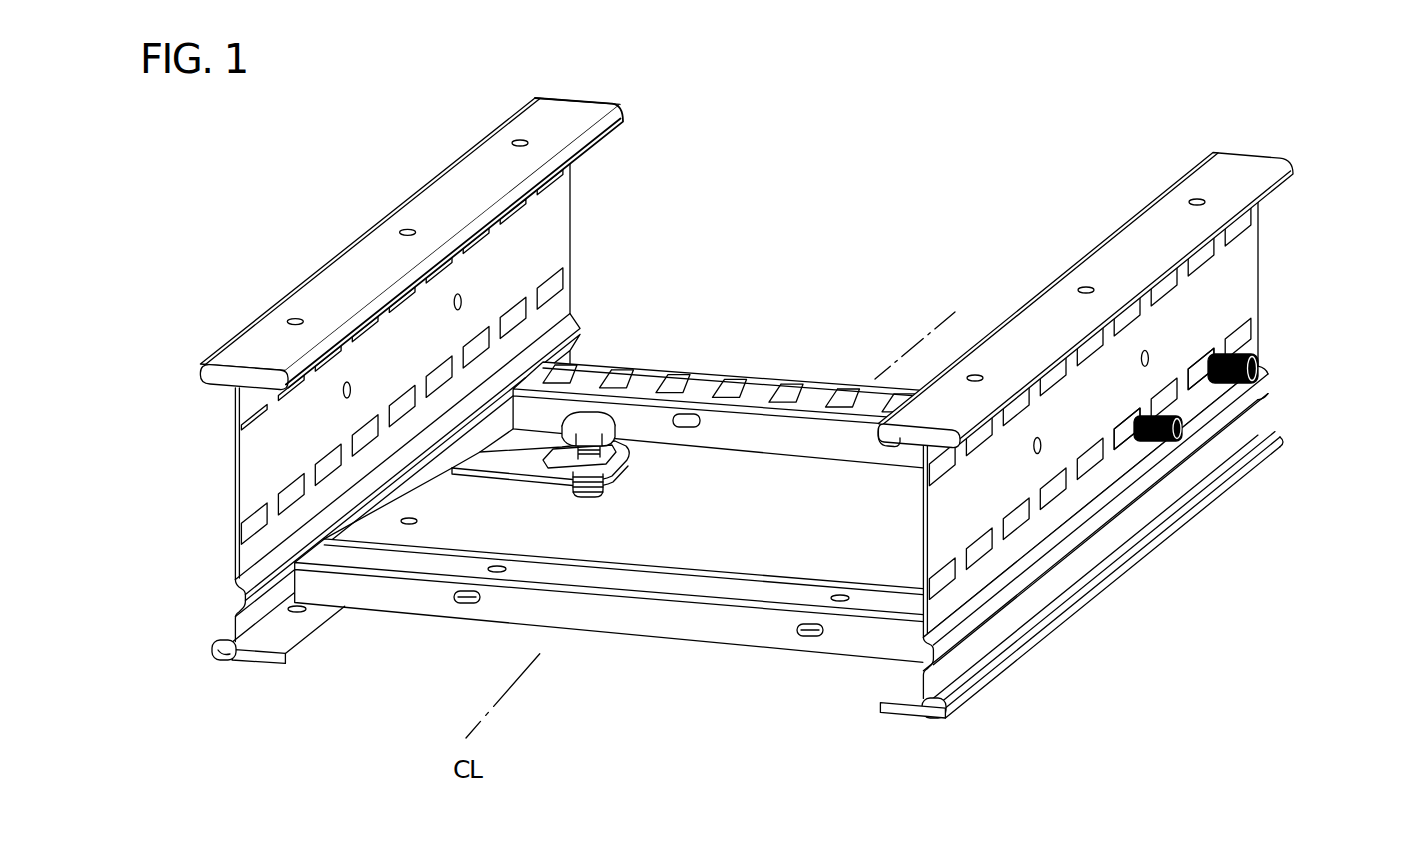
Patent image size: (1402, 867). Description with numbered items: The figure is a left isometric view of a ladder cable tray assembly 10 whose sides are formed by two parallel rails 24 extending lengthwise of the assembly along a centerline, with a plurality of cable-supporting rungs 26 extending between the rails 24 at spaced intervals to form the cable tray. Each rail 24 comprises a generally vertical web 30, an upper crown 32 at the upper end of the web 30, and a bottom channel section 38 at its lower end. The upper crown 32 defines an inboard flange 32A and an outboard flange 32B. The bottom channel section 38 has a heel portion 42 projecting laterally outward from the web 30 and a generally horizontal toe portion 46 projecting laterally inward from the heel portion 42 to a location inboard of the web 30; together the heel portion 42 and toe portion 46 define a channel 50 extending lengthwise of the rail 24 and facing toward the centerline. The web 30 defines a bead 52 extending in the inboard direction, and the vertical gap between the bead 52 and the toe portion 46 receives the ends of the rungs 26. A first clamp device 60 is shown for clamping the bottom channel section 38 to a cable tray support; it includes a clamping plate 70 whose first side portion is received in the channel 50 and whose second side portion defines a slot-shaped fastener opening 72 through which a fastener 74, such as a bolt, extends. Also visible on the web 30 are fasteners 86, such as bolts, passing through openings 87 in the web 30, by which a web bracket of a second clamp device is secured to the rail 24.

The cable tray assembly 10 is at (746, 413).
The rail 24 is at (746, 441).
The cable-supporting rung 26 is at (743, 428).
The web 30 is at (236, 493).
The upper crown 32 is at (322, 297).
The inboard flange 32A is at (597, 118).
The outboard flange 32B is at (203, 375).
The bottom channel section 38 is at (588, 549).
The heel portion 42 is at (228, 635).
The toe portion 46 is at (572, 682).
The channel 50 is at (222, 658).
The bead 52 is at (258, 583).
The first clamp device 60 is at (545, 431).
The clamping plate 70 is at (522, 453).
The fastener opening 72 is at (568, 462).
The fastener 74 is at (587, 414).
The fastener 86 is at (1262, 378).
The opening 87 is at (1196, 377).